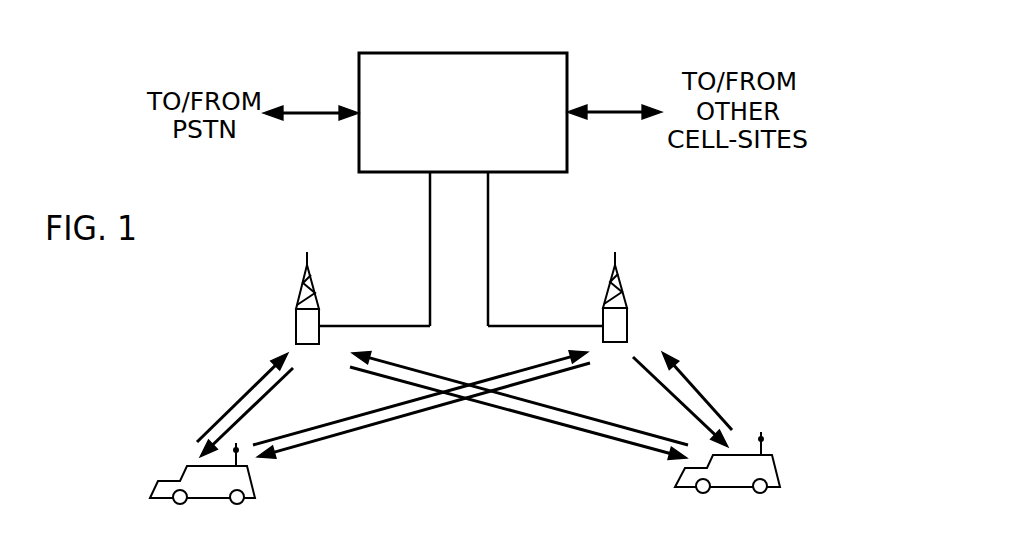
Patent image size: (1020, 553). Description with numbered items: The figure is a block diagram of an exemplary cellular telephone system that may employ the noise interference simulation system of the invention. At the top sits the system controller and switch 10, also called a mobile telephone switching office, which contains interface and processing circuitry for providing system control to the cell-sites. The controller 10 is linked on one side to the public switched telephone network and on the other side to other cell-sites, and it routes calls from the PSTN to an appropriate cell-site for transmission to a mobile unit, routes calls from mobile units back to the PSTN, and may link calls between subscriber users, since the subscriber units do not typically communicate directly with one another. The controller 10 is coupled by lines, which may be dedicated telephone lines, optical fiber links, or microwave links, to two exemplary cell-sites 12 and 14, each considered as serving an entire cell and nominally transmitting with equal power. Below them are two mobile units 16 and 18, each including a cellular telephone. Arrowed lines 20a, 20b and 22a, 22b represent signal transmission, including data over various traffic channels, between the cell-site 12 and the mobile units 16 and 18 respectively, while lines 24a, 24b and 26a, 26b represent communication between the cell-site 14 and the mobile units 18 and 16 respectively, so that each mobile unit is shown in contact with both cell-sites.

The system controller and switch 10 is at (457, 53).
The cell-site 12 is at (296, 321).
The cell-site 14 is at (627, 318).
The mobile unit 16 is at (155, 481).
The mobile unit 18 is at (782, 470).
The line 20a is at (265, 395).
The line 20b is at (243, 397).
The line 22a is at (637, 445).
The line 22b is at (393, 363).
The line 24a is at (666, 388).
The line 24b is at (692, 384).
The line 26a is at (313, 443).
The line 26b is at (548, 362).